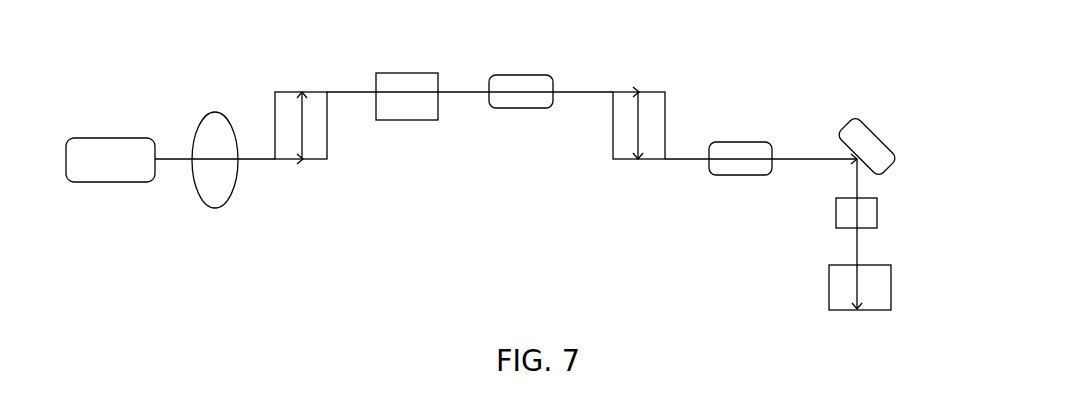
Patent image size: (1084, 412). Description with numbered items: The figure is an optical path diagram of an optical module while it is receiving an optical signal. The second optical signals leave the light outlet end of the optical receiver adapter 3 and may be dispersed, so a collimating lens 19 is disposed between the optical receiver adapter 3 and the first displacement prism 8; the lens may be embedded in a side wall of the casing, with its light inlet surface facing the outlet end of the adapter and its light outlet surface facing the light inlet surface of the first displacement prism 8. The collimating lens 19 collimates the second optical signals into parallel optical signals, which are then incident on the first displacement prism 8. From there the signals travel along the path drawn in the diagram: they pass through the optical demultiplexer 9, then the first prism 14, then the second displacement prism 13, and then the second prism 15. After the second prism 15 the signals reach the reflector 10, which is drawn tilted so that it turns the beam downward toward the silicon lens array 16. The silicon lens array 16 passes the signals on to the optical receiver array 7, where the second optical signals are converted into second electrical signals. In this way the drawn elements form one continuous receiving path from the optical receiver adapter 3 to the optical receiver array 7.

The optical receiver adapter 3 is at (98, 138).
The collimating lens 19 is at (217, 112).
The first displacement prism 8 is at (303, 90).
The optical demultiplexer 9 is at (412, 72).
The first prism 14 is at (517, 74).
The second displacement prism 13 is at (648, 90).
The second prism 15 is at (742, 142).
The reflector 10 is at (885, 137).
The silicon lens array 16 is at (878, 222).
The optical receiver array 7 is at (892, 308).